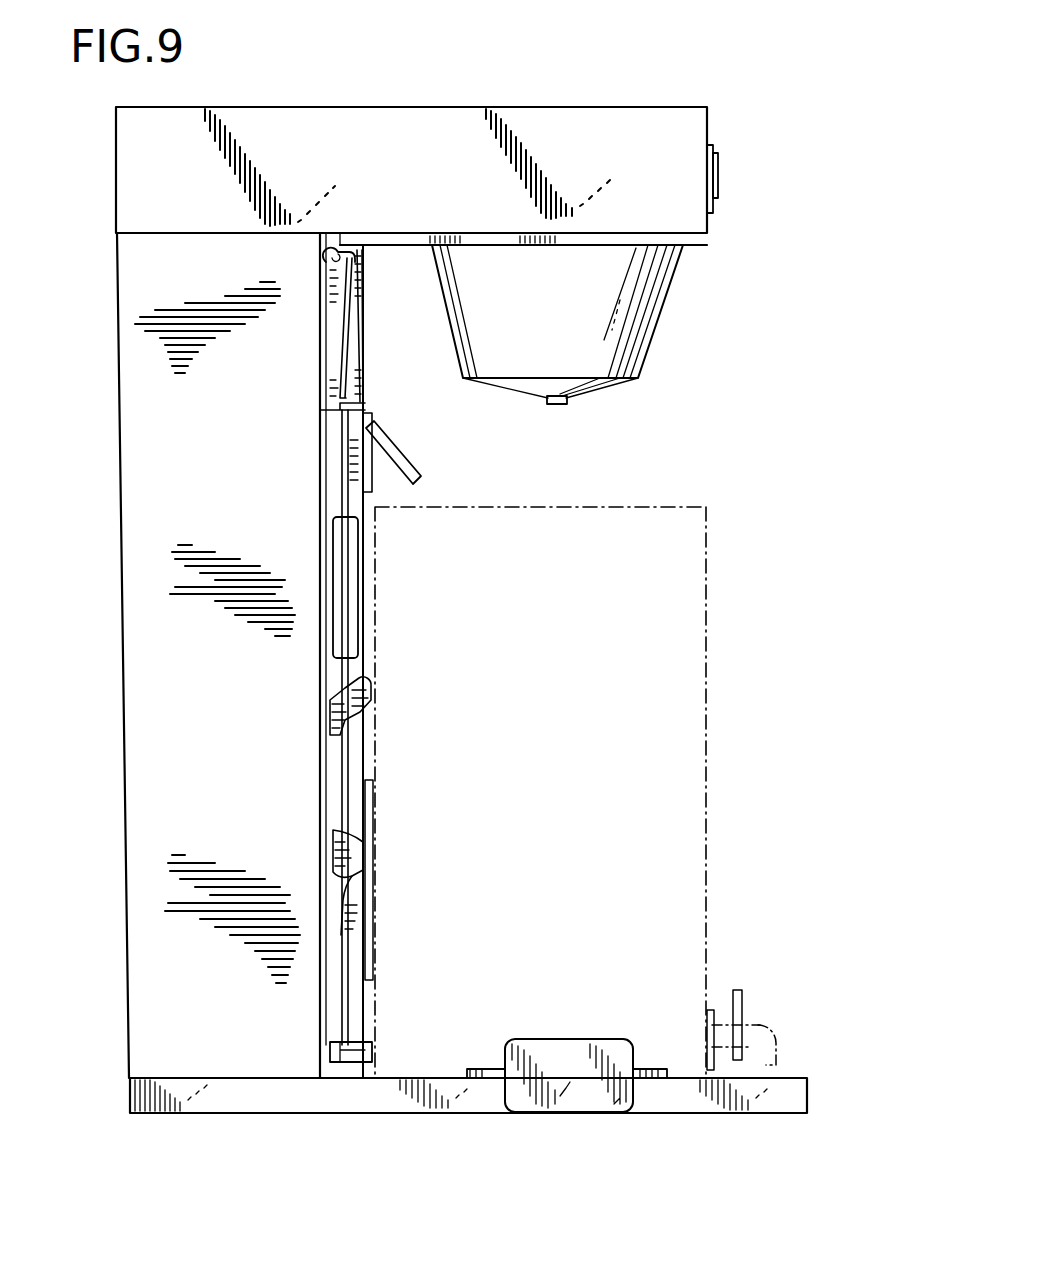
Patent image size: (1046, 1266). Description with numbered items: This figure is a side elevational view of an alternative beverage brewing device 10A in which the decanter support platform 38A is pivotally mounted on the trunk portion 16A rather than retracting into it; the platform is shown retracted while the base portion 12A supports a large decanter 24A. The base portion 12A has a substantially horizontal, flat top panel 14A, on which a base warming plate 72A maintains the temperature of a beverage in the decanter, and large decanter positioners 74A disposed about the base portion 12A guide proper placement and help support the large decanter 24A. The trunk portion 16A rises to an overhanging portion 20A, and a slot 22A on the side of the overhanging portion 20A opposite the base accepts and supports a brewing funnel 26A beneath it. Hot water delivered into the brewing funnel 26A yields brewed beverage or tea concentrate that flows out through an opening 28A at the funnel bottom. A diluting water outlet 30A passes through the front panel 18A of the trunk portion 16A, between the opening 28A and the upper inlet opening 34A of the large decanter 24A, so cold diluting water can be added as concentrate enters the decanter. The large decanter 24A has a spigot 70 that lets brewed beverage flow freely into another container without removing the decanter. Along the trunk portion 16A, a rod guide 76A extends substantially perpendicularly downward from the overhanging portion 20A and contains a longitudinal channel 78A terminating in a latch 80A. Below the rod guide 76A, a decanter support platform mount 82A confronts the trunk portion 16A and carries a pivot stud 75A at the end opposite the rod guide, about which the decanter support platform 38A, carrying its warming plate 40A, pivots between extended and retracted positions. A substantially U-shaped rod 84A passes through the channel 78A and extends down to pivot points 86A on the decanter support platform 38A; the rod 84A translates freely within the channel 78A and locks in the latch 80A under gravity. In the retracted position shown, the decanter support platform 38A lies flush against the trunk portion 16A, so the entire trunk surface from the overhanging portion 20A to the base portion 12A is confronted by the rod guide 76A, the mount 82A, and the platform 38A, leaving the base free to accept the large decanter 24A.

The beverage brewing device 10A is at (403, 90).
The base portion 12A is at (192, 1114).
The top panel 14A is at (790, 1078).
The trunk portion 16A is at (126, 823).
The front panel 18A is at (332, 1062).
The overhanging portion 20A is at (707, 125).
The slot 22A is at (707, 240).
The large decanter 24A is at (706, 656).
The brewing funnel 26A is at (664, 314).
The opening 28A is at (568, 403).
The diluting water outlet 30A is at (420, 470).
The upper inlet opening 34A is at (592, 508).
The decanter support platform 38A is at (372, 1062).
The warming plate 40A is at (372, 896).
The spigot 70 is at (770, 1024).
The base warming plate 72A is at (668, 1079).
The large decanter positioners 74A is at (506, 1095).
The pivot stud 75A is at (372, 690).
The rod guide 76A is at (358, 316).
The channel 78A is at (348, 282).
The latch 80A is at (330, 250).
The decanter support platform mount 82A is at (367, 628).
The rod 84A is at (372, 422).
The pivot points 86A is at (362, 568).